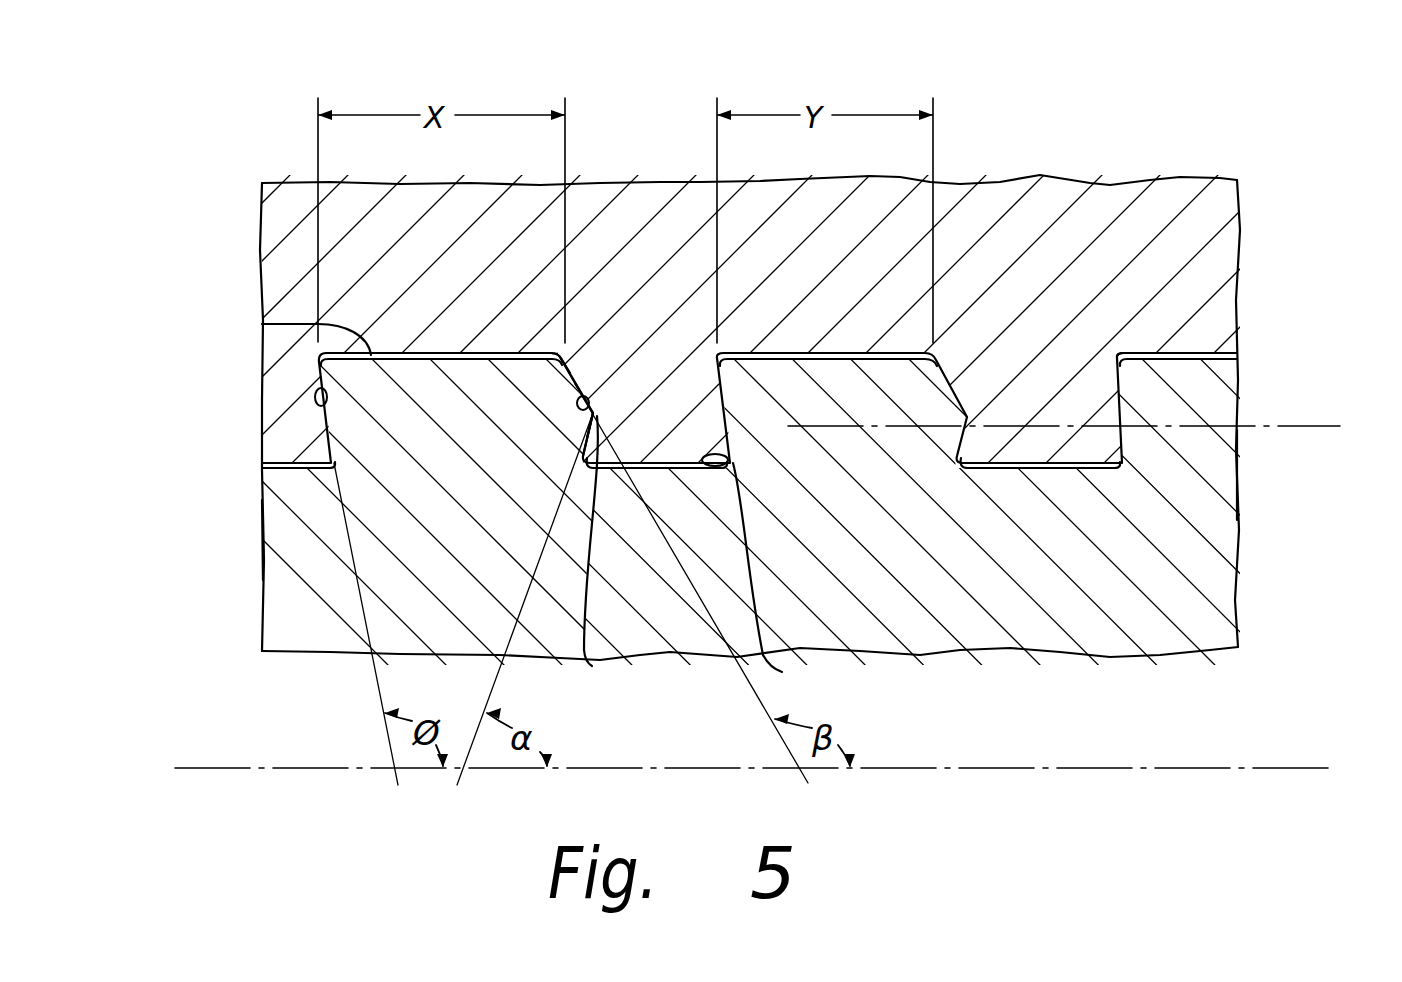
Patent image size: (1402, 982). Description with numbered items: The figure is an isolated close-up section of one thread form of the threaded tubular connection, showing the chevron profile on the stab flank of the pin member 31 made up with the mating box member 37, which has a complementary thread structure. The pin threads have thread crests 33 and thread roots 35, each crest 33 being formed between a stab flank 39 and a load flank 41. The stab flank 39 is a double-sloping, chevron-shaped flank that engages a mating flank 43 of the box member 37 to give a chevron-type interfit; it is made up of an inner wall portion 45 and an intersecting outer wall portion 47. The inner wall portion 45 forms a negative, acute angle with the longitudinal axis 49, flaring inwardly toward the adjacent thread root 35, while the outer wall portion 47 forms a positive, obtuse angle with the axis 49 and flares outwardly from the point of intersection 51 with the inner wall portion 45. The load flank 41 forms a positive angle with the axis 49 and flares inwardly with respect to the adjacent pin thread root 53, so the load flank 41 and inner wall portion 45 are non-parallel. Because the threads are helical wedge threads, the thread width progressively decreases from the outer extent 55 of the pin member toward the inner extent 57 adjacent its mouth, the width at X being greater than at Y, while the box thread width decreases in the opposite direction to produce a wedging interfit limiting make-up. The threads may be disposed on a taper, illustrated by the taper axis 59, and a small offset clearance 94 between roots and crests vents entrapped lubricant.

The pin member 31 is at (278, 592).
The thread crest 33 is at (262, 324).
The thread root 35 is at (782, 672).
The box member 37 is at (270, 216).
The stab flank 39 is at (578, 346).
The load flank 41 is at (327, 404).
The mating flank 43 is at (595, 412).
The inner wall portion 45 is at (591, 666).
The outer wall portion 47 is at (587, 398).
The longitudinal axis 49 is at (1243, 768).
The point of intersection 51 is at (601, 409).
The pin thread root 53 is at (292, 464).
The outer extent 55 is at (272, 540).
The inner extent 57 is at (1238, 469).
The taper axis 59 is at (1292, 426).
The offset clearance 94 is at (1165, 356).